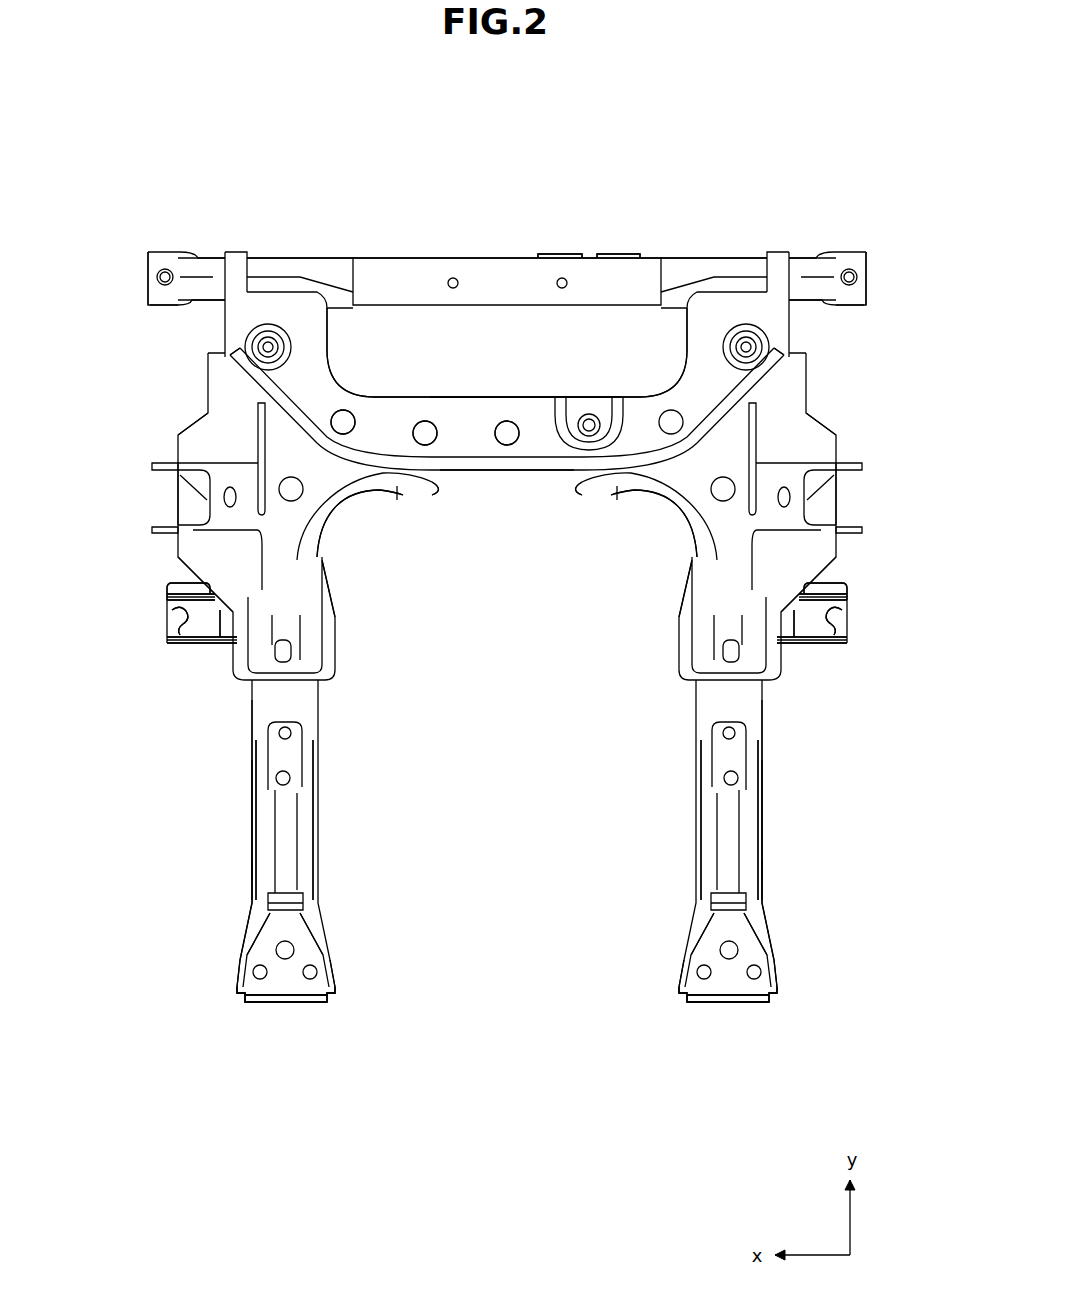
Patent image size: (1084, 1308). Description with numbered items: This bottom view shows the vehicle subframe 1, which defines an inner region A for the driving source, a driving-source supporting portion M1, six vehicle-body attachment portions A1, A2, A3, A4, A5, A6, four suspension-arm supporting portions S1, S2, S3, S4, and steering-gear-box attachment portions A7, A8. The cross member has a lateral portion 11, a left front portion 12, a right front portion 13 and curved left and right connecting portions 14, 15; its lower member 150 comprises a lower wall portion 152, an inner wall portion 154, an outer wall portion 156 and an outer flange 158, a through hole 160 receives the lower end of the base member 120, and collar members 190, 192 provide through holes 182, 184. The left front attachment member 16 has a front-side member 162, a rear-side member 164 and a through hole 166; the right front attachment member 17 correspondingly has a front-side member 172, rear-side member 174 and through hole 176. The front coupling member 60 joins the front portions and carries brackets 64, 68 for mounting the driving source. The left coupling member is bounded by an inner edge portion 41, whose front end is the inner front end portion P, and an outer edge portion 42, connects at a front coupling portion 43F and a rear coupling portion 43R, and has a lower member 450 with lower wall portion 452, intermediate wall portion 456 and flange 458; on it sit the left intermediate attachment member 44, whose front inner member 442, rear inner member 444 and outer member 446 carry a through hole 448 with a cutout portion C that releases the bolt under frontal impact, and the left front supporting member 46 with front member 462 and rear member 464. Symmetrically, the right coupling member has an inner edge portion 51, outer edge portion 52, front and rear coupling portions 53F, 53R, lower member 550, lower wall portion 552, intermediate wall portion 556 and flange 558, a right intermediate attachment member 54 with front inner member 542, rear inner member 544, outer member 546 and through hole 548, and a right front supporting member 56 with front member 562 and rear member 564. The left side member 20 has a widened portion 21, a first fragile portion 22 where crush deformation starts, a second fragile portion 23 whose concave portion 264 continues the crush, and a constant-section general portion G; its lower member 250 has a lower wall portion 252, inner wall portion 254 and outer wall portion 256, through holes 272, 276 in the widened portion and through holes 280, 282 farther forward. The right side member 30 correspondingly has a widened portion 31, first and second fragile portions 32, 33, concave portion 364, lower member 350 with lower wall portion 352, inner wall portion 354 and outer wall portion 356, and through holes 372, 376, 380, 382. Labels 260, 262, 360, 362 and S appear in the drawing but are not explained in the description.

The subframe 1 is at (748, 115).
The driving-source supporting portion M1 is at (588, 215).
The lateral portion 11 is at (450, 395).
The left front portion 12 is at (680, 340).
The right front portion 13 is at (335, 330).
The left connecting portion 14 is at (665, 380).
The right connecting portion 15 is at (362, 380).
The left front attachment member 16 is at (862, 245).
The right front attachment member 17 is at (146, 245).
The left side member 20 is at (800, 793).
The widened portion 21 is at (718, 1007).
The first fragile portion 22 is at (685, 920).
The second fragile portion 23 is at (708, 893).
The right side member 30 is at (213, 793).
The widened portion 31 is at (297, 1007).
The first fragile portion 32 is at (330, 920).
The second fragile portion 33 is at (305, 893).
The inner edge portion 41 is at (663, 560).
The outer edge portion 42 is at (830, 420).
The front coupling portion 43F is at (705, 438).
The rear coupling portion 43R is at (662, 655).
The left intermediate attachment member 44 is at (857, 648).
The left front supporting member 46 is at (840, 492).
The inner edge portion 51 is at (343, 565).
The outer edge portion 52 is at (183, 422).
The front coupling portion 53F is at (310, 435).
The rear coupling portion 53R is at (350, 655).
The right intermediate attachment member 54 is at (158, 648).
The right front supporting member 56 is at (175, 492).
The front coupling member 60 is at (383, 252).
The bracket 64 is at (628, 252).
The bracket 68 is at (548, 252).
The base member 120 is at (582, 410).
The lower member 150 is at (530, 395).
The lower wall portion 152 is at (395, 412).
The inner wall portion 154 is at (510, 395).
The outer wall portion 156 is at (495, 478).
The outer flange 158 is at (447, 498).
The through hole 160 is at (583, 420).
The front-side member 162 is at (808, 262).
The rear-side member 164 is at (840, 302).
The through hole 166 is at (857, 272).
The front-side member 172 is at (200, 262).
The rear-side member 174 is at (185, 303).
The through hole 176 is at (157, 277).
The through hole 182 is at (752, 347).
The through hole 184 is at (272, 345).
The collar member 190 is at (742, 300).
The collar member 192 is at (270, 300).
The lower member 250 is at (676, 762).
The lower wall portion 252 is at (720, 813).
The inner wall portion 254 is at (697, 873).
The outer wall portion 256 is at (762, 877).
The right flange 260 is at (697, 928).
The right flange 262 is at (766, 930).
The concave portion 264 is at (752, 903).
The through hole 272 is at (690, 987).
The through hole 276 is at (760, 972).
The through hole 280 is at (737, 778).
The through hole 282 is at (722, 733).
The lower member 350 is at (338, 762).
The lower wall portion 352 is at (293, 813).
The inner wall portion 354 is at (317, 873).
The outer wall portion 356 is at (253, 877).
The left flange 360 is at (317, 928).
The left flange 362 is at (248, 930).
The concave portion 364 is at (262, 903).
The through hole 372 is at (325, 988).
The through hole 376 is at (254, 972).
The through hole 380 is at (278, 778).
The through hole 382 is at (292, 733).
The front inner member 442 is at (817, 590).
The rear inner member 444 is at (838, 588).
The outer member 446 is at (794, 645).
The through hole 448 is at (829, 643).
The lower member 450 is at (845, 436).
The lower wall portion 452 is at (650, 525).
The intermediate wall portion 456 is at (660, 560).
The flange 458 is at (672, 613).
The front member 462 is at (858, 466).
The rear member 464 is at (858, 530).
The front inner member 542 is at (198, 590).
The rear inner member 544 is at (177, 588).
The outer member 546 is at (220, 645).
The through hole 548 is at (186, 643).
The lower member 550 is at (170, 437).
The lower wall portion 552 is at (365, 524).
The intermediate wall portion 556 is at (352, 560).
The flange 558 is at (338, 613).
The front member 562 is at (155, 466).
The rear member 564 is at (158, 530).
The inner region A is at (470, 337).
The first vehicle-body attachment portion A1 is at (878, 290).
The second vehicle-body attachment portion A2 is at (140, 295).
The third vehicle-body attachment portion A3 is at (854, 594).
The fourth vehicle-body attachment portion A4 is at (160, 594).
The fifth vehicle-body attachment portion A5 is at (752, 1007).
The sixth vehicle-body attachment portion A6 is at (262, 1007).
The steering-gear-box left attachment portion A7 is at (790, 345).
The steering-gear-box right attachment portion A8 is at (240, 353).
The cutout portion C is at (168, 625).
The general portion G is at (240, 838).
The inner front end portion P is at (463, 525).
The space S is at (265, 833).
The first supporting portion S1 is at (840, 507).
The second supporting portion S2 is at (175, 507).
The third supporting portion S3 is at (766, 752).
The fourth supporting portion S4 is at (248, 752).